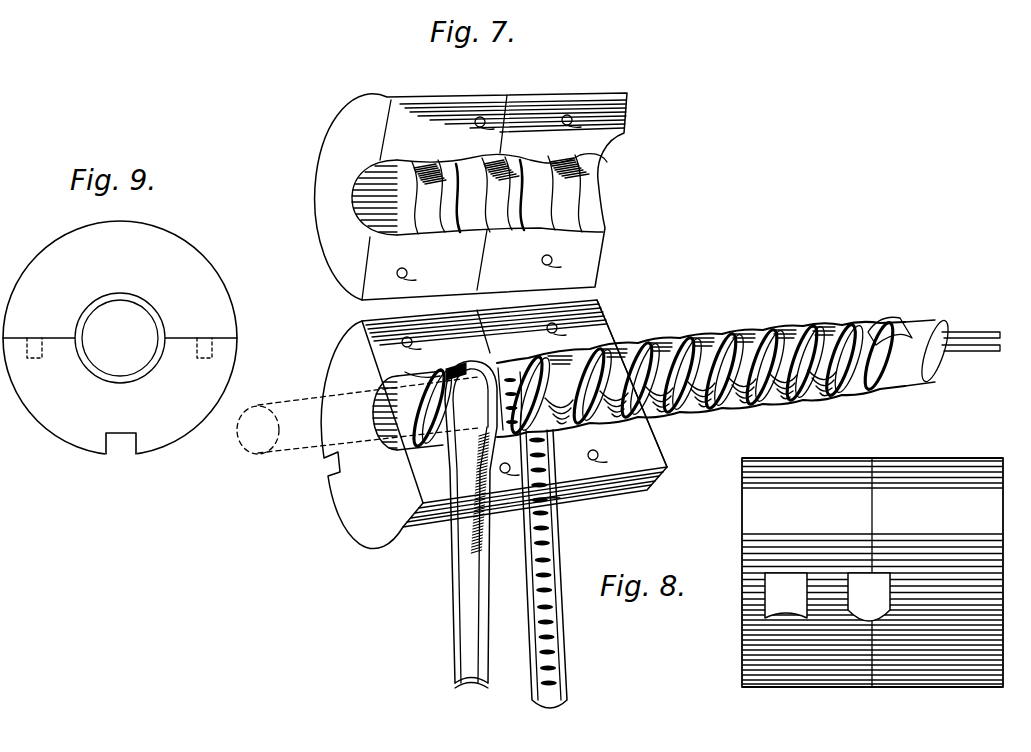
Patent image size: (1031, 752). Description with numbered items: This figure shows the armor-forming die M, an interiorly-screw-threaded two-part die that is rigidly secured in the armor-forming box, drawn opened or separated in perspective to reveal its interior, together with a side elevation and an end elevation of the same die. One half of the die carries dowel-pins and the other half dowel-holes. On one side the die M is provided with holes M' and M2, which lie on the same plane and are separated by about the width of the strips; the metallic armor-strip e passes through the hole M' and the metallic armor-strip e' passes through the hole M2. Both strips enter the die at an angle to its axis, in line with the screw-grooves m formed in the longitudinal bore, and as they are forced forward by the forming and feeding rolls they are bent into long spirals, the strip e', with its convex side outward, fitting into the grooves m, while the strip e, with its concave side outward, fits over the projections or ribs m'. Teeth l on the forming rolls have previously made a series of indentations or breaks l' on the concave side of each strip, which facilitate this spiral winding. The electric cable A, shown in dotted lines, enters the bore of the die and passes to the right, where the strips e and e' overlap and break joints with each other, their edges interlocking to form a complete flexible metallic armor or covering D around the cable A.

In FIG. 9, the armor-forming die M is at (120, 340).
In FIG. 7, the armor-forming die M is at (486, 323).
In FIG. 8, the armor-forming die M is at (872, 572).
In FIG. 7, the hole M' is at (495, 431).
In FIG. 8, the hole M' is at (786, 595).
In FIG. 7, the hole M2 is at (551, 480).
In FIG. 8, the hole M2 is at (869, 597).
In FIG. 7, the screw-grooves m is at (497, 196).
In FIG. 7, the projections or ribs m' is at (479, 259).
In FIG. 7, the teeth l is at (510, 384).
In FIG. 7, the indentations or breaks l' is at (553, 516).
In FIG. 7, the metallic armor-strip e is at (460, 524).
In FIG. 7, the metallic armor-strip e' is at (553, 569).
In FIG. 7, the electric cable A is at (944, 314).
In FIG. 7, the metallic armor or covering D is at (642, 383).